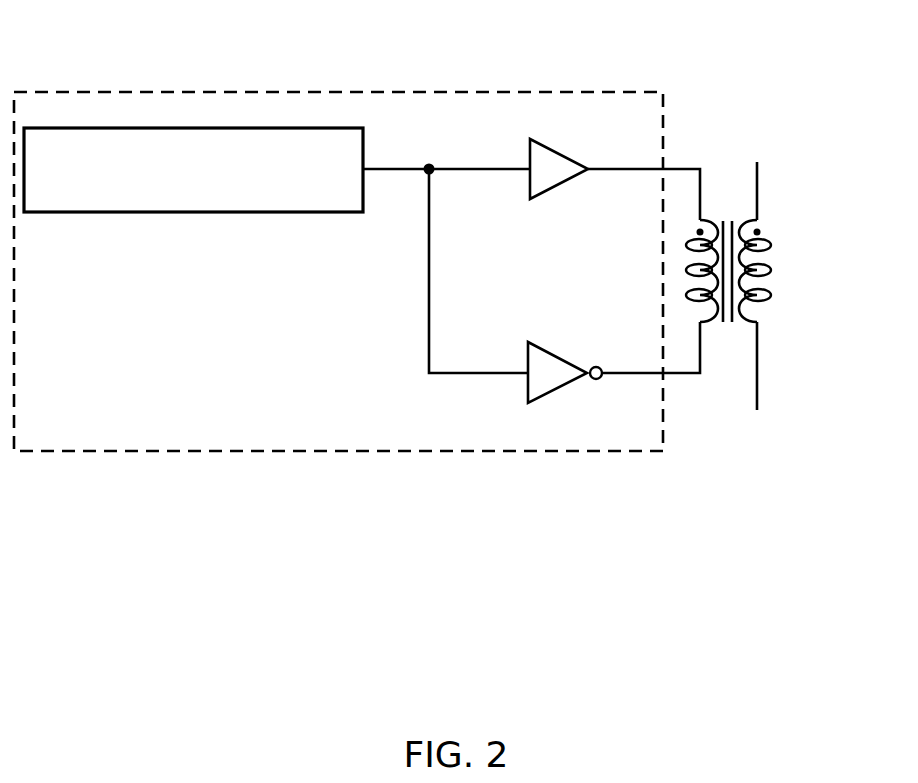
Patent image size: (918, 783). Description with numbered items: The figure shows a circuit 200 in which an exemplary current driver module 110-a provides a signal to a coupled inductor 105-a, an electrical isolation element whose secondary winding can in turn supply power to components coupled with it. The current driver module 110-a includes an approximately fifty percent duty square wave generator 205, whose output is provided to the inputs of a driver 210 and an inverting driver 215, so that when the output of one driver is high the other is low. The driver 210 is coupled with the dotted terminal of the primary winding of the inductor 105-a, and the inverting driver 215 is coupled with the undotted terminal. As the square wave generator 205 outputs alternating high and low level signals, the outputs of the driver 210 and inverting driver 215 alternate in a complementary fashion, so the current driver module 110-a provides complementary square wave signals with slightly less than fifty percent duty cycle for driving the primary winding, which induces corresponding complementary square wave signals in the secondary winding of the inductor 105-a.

The current driver module 110-a is at (528, 92).
The square wave generator 205 is at (146, 213).
The driver 210 is at (531, 190).
The inverting driver 215 is at (527, 385).
The coupled inductor 105-a is at (703, 205).
The circuit 200 is at (735, 567).